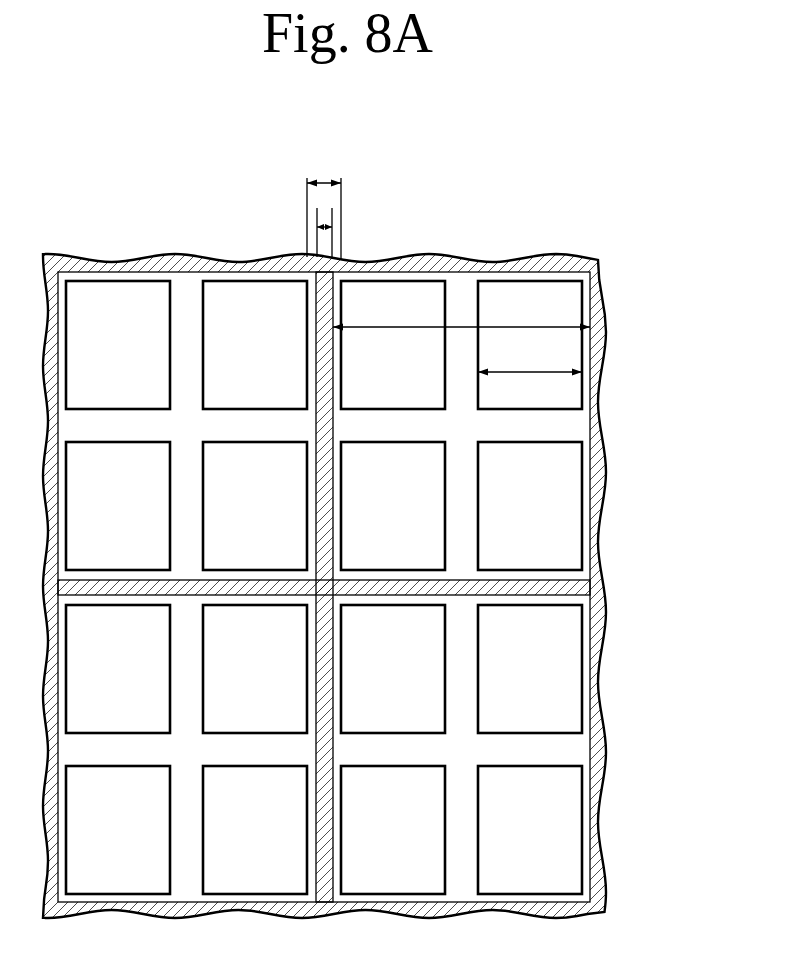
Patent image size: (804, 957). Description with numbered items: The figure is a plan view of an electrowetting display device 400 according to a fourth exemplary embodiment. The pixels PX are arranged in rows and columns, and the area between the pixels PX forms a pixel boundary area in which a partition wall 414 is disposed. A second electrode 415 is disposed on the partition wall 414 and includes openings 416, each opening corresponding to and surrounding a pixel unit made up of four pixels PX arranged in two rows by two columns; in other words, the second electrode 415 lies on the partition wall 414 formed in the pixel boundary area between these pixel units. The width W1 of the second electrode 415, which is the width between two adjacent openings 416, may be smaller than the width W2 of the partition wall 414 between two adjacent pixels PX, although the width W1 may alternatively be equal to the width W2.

The electrowetting display device 400 is at (567, 163).
The partition wall 414 is at (577, 427).
The second electrode 415 is at (592, 583).
The openings 416 is at (530, 326).
The pixels PX is at (530, 371).
The width of the second electrode W1 is at (324, 230).
The width of the partition wall W2 is at (324, 209).